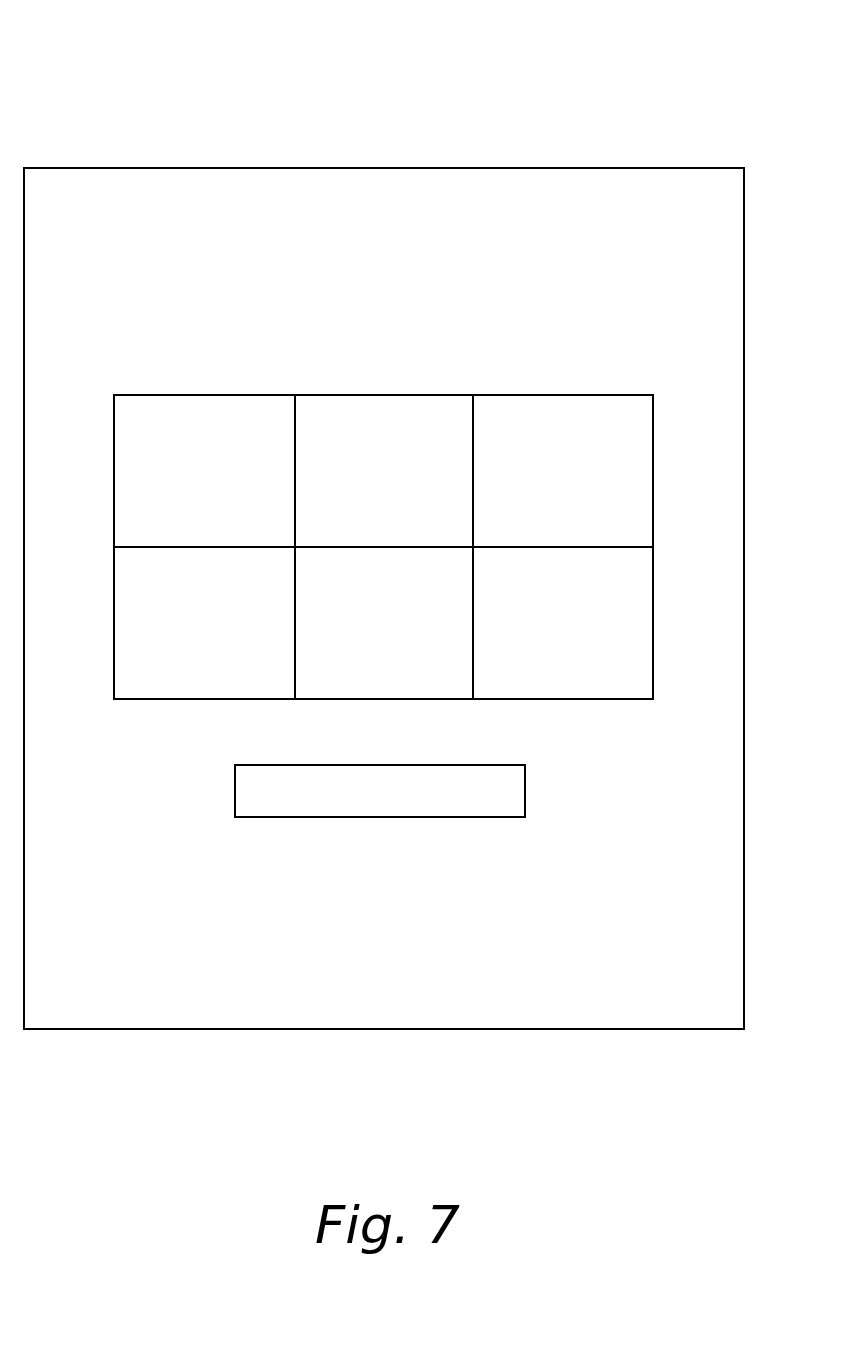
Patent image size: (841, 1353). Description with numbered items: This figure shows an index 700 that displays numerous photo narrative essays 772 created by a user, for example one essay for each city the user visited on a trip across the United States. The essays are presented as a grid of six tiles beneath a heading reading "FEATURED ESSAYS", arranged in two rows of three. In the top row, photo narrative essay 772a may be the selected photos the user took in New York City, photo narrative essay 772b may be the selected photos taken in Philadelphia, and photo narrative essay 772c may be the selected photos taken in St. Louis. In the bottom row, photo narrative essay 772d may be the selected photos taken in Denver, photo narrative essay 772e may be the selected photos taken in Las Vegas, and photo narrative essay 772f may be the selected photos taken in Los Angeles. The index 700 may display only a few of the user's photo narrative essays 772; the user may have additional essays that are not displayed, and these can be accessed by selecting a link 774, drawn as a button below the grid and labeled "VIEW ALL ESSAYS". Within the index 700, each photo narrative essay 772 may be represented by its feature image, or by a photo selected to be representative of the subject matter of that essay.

The index 700 is at (124, 70).
The photo narrative essays 772 is at (152, 354).
The photo narrative essay 772a is at (231, 483).
The photo narrative essay 772b is at (412, 483).
The photo narrative essay 772c is at (590, 483).
The photo narrative essay 772d is at (232, 635).
The photo narrative essay 772e is at (412, 635).
The photo narrative essay 772f is at (589, 635).
The link 774 is at (235, 791).